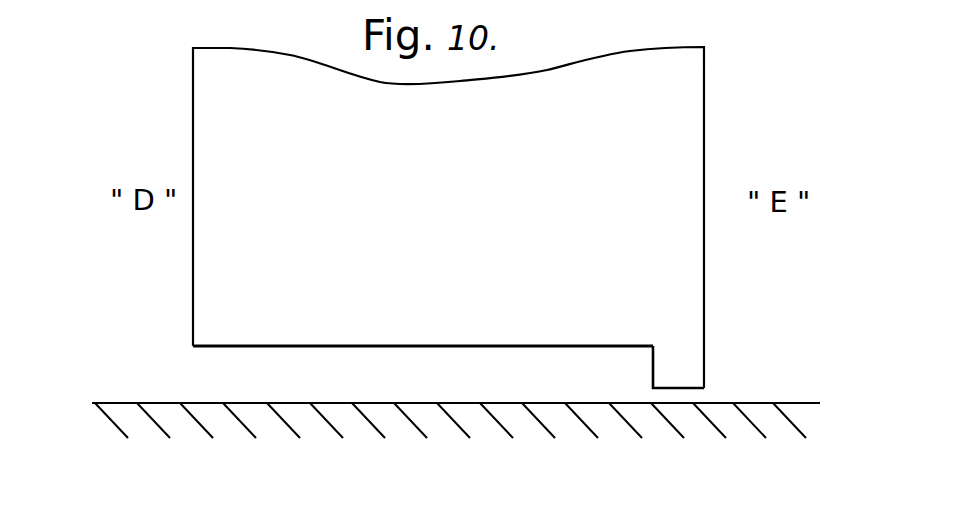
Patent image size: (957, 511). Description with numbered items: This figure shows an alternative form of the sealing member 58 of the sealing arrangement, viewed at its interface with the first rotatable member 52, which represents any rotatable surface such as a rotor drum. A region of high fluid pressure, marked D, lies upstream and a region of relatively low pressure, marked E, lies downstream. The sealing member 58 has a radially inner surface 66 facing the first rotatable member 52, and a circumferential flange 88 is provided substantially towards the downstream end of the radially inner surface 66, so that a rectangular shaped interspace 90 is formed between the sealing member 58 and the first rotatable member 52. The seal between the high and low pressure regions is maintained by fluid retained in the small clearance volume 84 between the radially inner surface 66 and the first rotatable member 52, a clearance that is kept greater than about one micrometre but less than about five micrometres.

The sealing member 58 is at (225, 122).
The first rotatable member 52 is at (127, 403).
The radially inner surface 66 is at (298, 347).
The circumferential flange 88 is at (687, 367).
The rectangular shaped interspace 90 is at (442, 365).
The clearance volume 84 is at (667, 398).